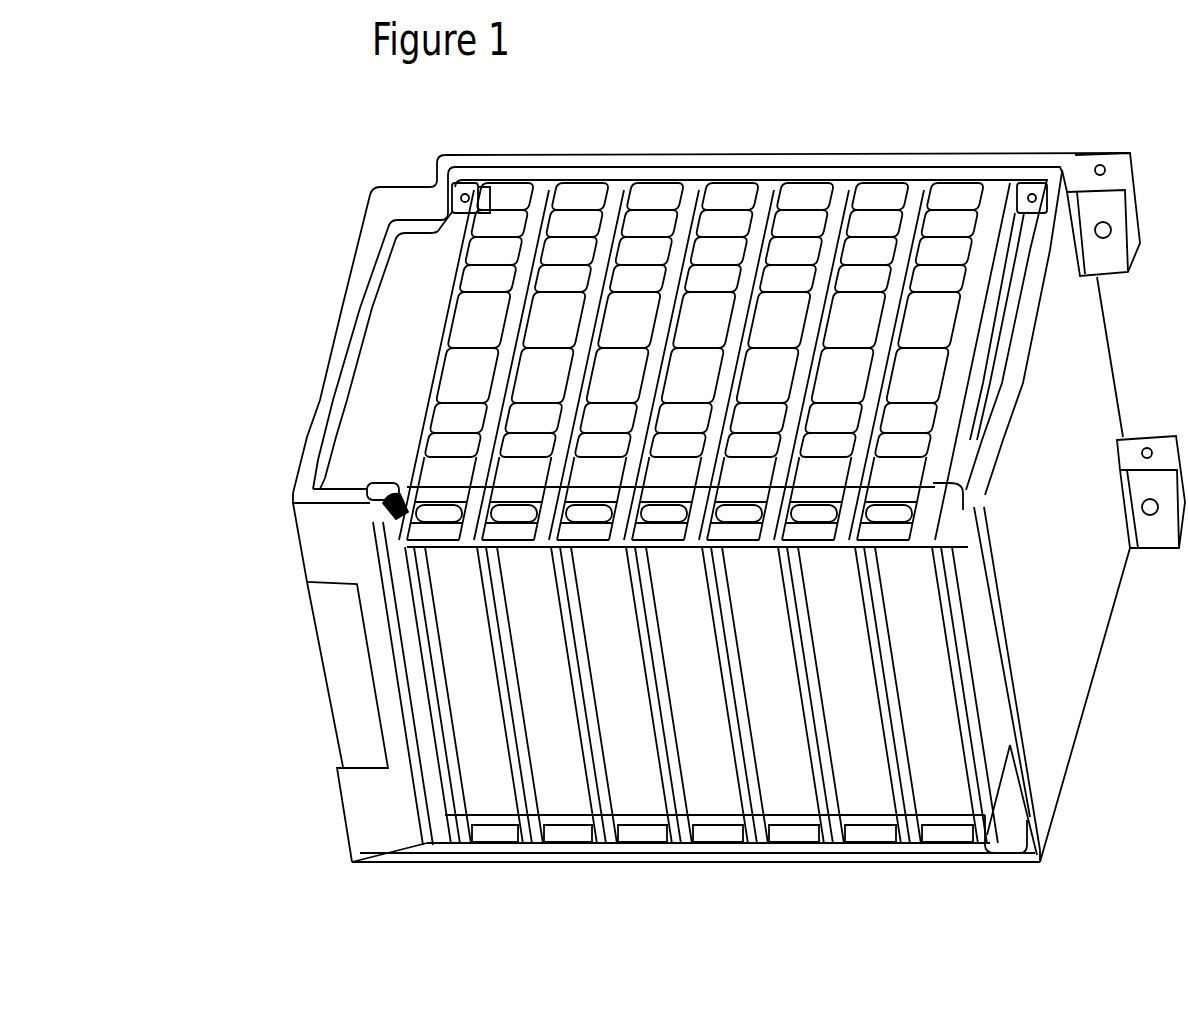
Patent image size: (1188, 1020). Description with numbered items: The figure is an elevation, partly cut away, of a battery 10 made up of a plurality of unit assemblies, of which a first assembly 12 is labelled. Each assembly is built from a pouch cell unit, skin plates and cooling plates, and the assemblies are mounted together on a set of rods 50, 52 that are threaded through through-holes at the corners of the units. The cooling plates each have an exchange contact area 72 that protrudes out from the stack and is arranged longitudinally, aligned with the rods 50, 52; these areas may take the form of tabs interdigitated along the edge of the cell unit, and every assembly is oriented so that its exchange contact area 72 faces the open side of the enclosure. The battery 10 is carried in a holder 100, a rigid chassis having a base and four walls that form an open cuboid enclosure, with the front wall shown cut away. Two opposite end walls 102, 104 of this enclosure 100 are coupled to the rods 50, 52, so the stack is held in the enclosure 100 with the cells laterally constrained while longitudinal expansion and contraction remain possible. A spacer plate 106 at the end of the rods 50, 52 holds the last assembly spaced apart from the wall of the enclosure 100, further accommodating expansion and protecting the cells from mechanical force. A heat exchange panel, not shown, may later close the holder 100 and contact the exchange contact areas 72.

The battery 10 is at (262, 880).
The assembly 12 is at (490, 818).
The rod 50 is at (870, 816).
The rod 52 is at (943, 543).
The exchange contact area 72 is at (527, 188).
The holder 100 is at (1043, 862).
The end wall 102 is at (1087, 663).
The end wall 104 is at (330, 610).
The spacer plate 106 is at (985, 800).